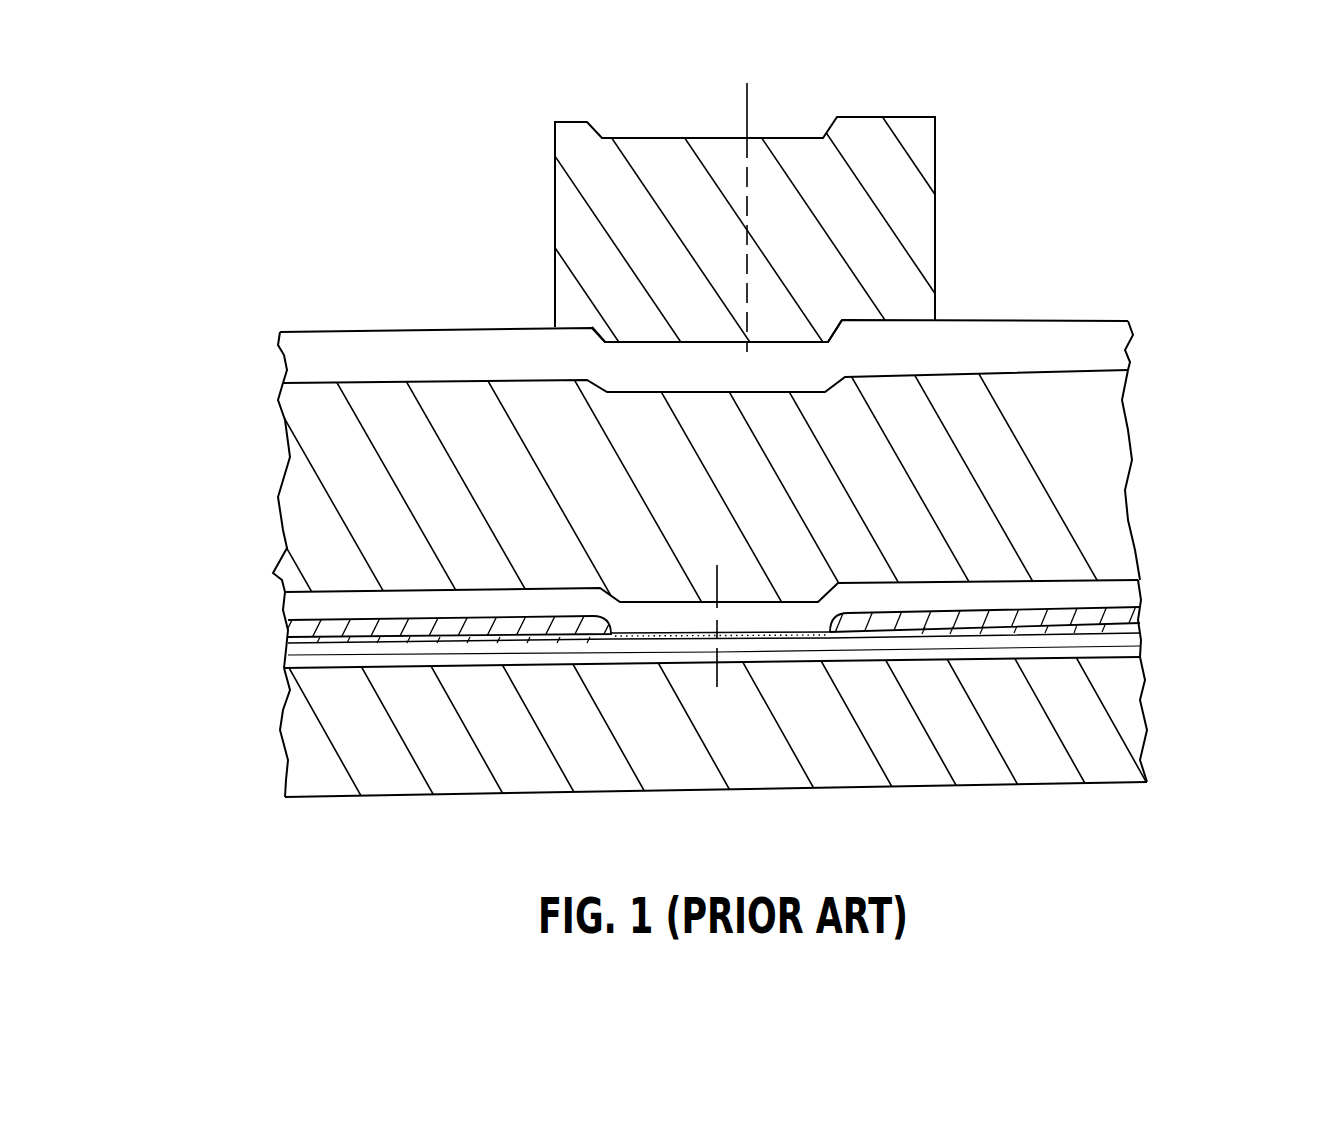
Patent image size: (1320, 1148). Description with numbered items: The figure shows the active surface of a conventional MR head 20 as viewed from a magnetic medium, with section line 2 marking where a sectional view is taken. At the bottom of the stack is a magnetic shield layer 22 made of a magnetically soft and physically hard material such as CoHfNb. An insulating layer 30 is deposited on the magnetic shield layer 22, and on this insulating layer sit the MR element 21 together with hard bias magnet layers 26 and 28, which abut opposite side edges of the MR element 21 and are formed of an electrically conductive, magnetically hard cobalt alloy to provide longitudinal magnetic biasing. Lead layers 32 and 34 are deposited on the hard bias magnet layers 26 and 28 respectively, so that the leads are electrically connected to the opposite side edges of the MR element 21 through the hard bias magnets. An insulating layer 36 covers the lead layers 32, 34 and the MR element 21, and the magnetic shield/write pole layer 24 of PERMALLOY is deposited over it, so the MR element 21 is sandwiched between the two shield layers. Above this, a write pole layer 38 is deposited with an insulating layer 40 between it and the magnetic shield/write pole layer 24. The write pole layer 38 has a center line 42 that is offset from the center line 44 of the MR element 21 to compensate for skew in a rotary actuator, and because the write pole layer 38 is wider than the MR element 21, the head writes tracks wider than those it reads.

The MR head 20 is at (1054, 245).
The MR element 21 is at (790, 640).
The magnetic shield layer 22 is at (1050, 775).
The magnetic shield/write pole layer 24 is at (1097, 512).
The hard bias magnet layer 26 is at (1120, 635).
The hard bias magnet layer 28 is at (307, 645).
The insulating layer 30 is at (1130, 648).
The lead layer 32 is at (1117, 613).
The lead layer 34 is at (303, 628).
The insulating layer 36 is at (1123, 588).
The write pole layer 38 is at (920, 196).
The insulating layer 40 is at (1117, 343).
The center line 42 is at (747, 110).
The center line 44 is at (717, 610).
The section line 2- 2 is at (718, 652).